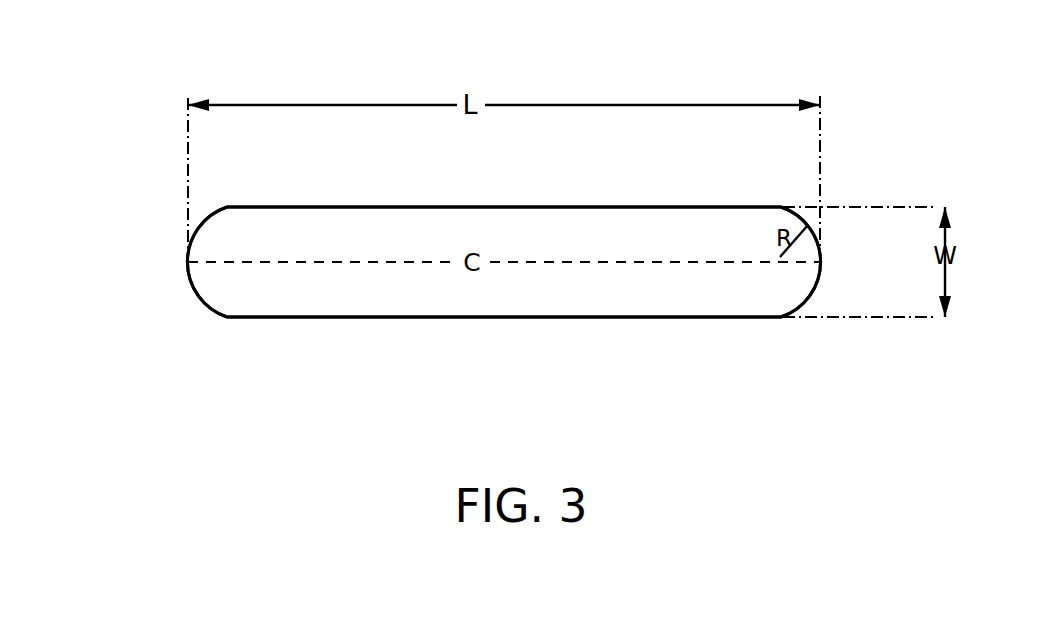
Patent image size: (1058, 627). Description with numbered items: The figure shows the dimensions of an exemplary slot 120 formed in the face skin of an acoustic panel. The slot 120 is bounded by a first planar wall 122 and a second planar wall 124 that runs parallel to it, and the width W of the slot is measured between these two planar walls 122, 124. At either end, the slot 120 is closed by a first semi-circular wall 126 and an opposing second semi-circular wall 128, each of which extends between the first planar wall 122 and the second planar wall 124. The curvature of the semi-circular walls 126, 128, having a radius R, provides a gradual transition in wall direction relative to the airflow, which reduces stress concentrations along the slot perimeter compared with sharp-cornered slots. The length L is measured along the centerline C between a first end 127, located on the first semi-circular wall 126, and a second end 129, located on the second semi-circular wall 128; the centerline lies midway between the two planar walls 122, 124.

The slot 120 is at (131, 182).
The first planar wall 122 is at (515, 207).
The second planar wall 124 is at (458, 317).
The first semi-circular wall 126 is at (192, 290).
The first end 127 is at (168, 262).
The second semi-circular wall 128 is at (809, 297).
The second end 129 is at (838, 258).